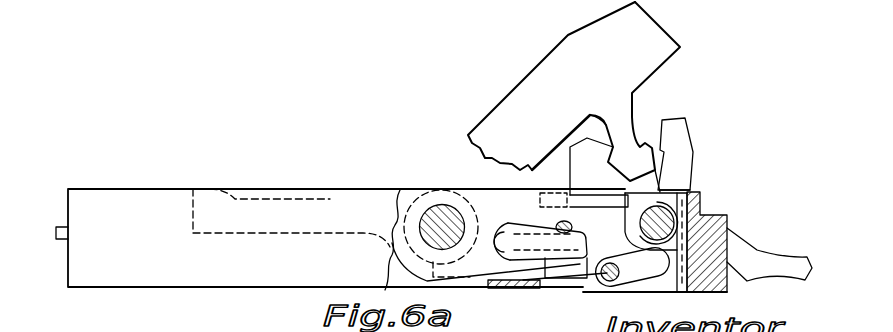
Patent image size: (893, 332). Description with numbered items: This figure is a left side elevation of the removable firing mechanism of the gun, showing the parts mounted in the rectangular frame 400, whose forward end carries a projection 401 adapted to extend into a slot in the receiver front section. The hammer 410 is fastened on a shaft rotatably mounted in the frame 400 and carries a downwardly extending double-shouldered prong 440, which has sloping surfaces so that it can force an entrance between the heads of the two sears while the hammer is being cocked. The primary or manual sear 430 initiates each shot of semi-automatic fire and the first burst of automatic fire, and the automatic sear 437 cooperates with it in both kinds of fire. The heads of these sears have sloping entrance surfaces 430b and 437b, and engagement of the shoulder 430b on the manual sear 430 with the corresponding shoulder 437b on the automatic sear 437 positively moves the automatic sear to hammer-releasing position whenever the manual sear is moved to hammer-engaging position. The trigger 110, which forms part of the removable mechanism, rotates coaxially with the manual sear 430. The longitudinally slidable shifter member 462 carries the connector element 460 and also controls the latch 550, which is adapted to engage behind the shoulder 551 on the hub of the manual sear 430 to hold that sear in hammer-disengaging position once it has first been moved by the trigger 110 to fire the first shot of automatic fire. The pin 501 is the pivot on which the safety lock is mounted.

The frame 400 is at (100, 276).
The projection 401 is at (58, 227).
The connector element 460 is at (565, 222).
The shifter member 462 is at (576, 266).
The pin 501 is at (603, 281).
The latch 550 is at (650, 265).
The shoulder 551 is at (652, 246).
The prong 440 is at (638, 143).
The trigger 110 is at (776, 254).
The hammer 410 is at (653, 35).
The manual sear 430 is at (583, 133).
The sloping entrance surface 430b is at (622, 200).
The automatic sear 437 is at (685, 150).
The sloping entrance surface 437b is at (637, 203).